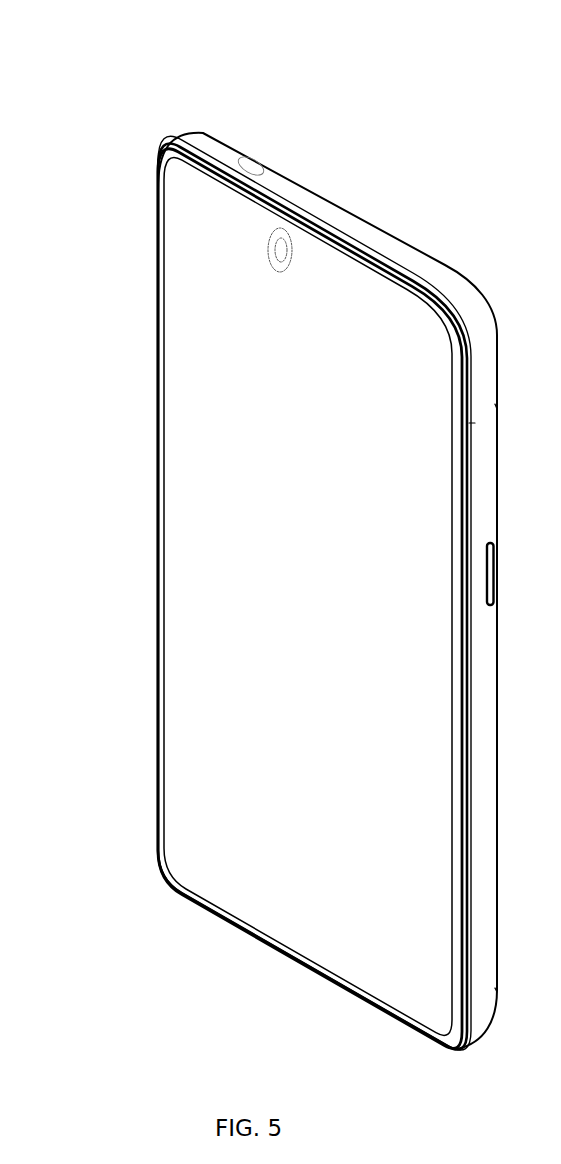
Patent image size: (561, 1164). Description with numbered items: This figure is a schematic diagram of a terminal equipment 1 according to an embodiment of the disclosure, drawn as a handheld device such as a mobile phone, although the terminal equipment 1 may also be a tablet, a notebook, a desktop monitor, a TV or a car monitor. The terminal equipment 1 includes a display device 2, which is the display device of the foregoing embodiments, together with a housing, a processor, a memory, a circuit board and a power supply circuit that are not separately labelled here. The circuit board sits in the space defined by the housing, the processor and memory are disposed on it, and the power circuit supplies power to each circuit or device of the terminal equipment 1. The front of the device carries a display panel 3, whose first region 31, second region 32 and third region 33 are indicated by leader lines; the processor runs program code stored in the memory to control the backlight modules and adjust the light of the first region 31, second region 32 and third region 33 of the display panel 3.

The terminal equipment 1 is at (108, 54).
The display device 2 is at (165, 370).
The display panel 3 is at (426, 147).
The first region 31 is at (341, 236).
The second region 32 is at (308, 273).
The third region 33 is at (281, 247).